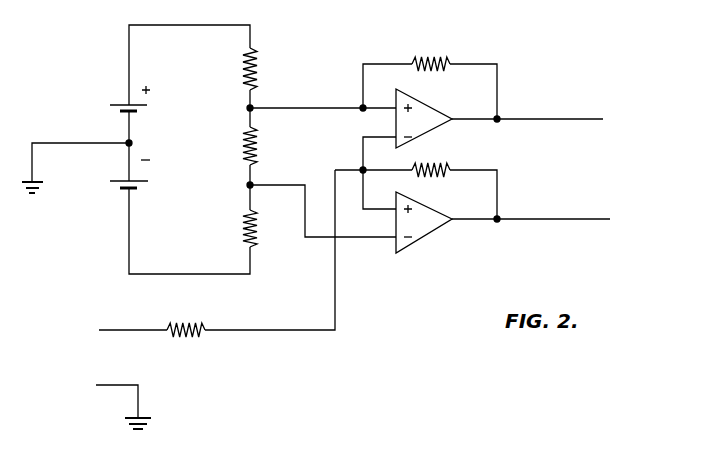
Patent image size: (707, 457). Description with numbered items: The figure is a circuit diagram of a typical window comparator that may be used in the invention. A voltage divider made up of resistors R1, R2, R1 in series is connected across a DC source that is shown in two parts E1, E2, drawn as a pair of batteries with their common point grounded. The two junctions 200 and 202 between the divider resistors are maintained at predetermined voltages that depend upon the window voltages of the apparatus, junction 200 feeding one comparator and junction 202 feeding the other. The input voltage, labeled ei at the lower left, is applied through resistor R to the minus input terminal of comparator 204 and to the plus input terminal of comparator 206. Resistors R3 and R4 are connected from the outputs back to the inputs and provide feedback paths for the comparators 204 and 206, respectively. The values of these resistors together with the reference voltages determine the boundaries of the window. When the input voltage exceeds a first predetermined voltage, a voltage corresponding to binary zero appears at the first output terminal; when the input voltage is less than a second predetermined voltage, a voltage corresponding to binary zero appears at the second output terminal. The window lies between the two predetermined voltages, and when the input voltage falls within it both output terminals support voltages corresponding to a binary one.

The junction 200 is at (246, 108).
The junction 202 is at (246, 185).
The comparator 204 is at (430, 104).
The comparator 206 is at (436, 212).
The resistor R1 is at (257, 82).
The resistor R2 is at (257, 156).
The resistor R3 is at (416, 58).
The resistor R4 is at (416, 164).
The resistor R is at (196, 326).
The DC source part E1 is at (110, 105).
The DC source part E2 is at (112, 182).
The input voltage ei is at (114, 391).